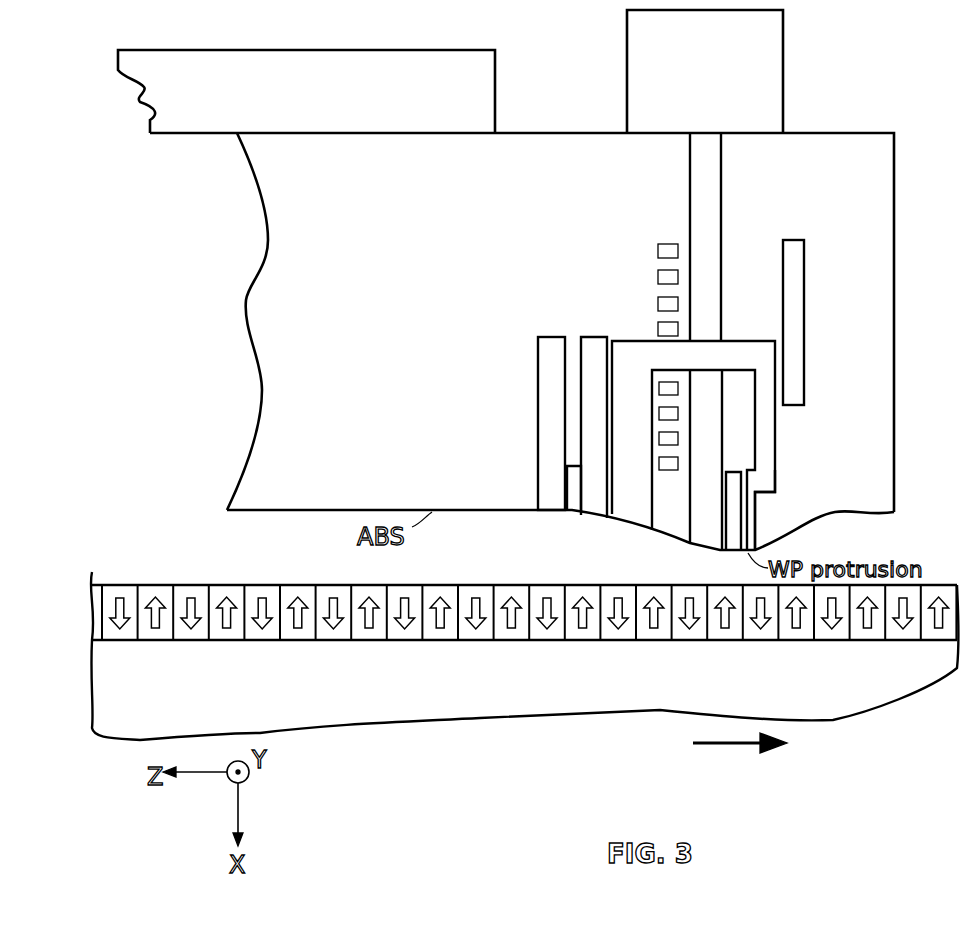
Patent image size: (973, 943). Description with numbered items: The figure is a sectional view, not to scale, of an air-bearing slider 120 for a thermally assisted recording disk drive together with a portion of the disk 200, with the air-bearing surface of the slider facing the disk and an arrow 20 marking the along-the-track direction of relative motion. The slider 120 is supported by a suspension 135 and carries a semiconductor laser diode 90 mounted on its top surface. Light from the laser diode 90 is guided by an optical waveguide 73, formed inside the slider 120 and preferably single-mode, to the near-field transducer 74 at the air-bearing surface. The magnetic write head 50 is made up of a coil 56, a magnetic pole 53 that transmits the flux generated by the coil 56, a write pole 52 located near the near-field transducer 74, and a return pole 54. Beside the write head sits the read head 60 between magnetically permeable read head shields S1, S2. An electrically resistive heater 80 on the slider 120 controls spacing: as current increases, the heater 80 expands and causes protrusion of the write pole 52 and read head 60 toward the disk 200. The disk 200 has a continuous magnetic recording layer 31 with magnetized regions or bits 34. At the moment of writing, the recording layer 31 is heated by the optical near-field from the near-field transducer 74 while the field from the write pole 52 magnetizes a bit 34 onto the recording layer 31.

The air-bearing slider 120 is at (273, 400).
The suspension 135 is at (421, 45).
The semiconductor laser diode 90 is at (768, 88).
The optical waveguide 73 is at (703, 283).
The electrically resistive heater 80 is at (793, 273).
The return pole 54 is at (632, 352).
The magnetic pole 53 is at (765, 388).
The write pole 52 is at (752, 503).
The near-field transducer 74 is at (733, 472).
The coil 56 is at (656, 250).
The magnetic write head 50 is at (630, 276).
The read head shield S1 is at (551, 425).
The read head shield S2 is at (596, 336).
The read head 60 is at (564, 497).
The disk 200 is at (835, 705).
The recording layer 31 is at (72, 588).
The bits 34 is at (900, 628).
The medium motion direction 20 is at (728, 746).